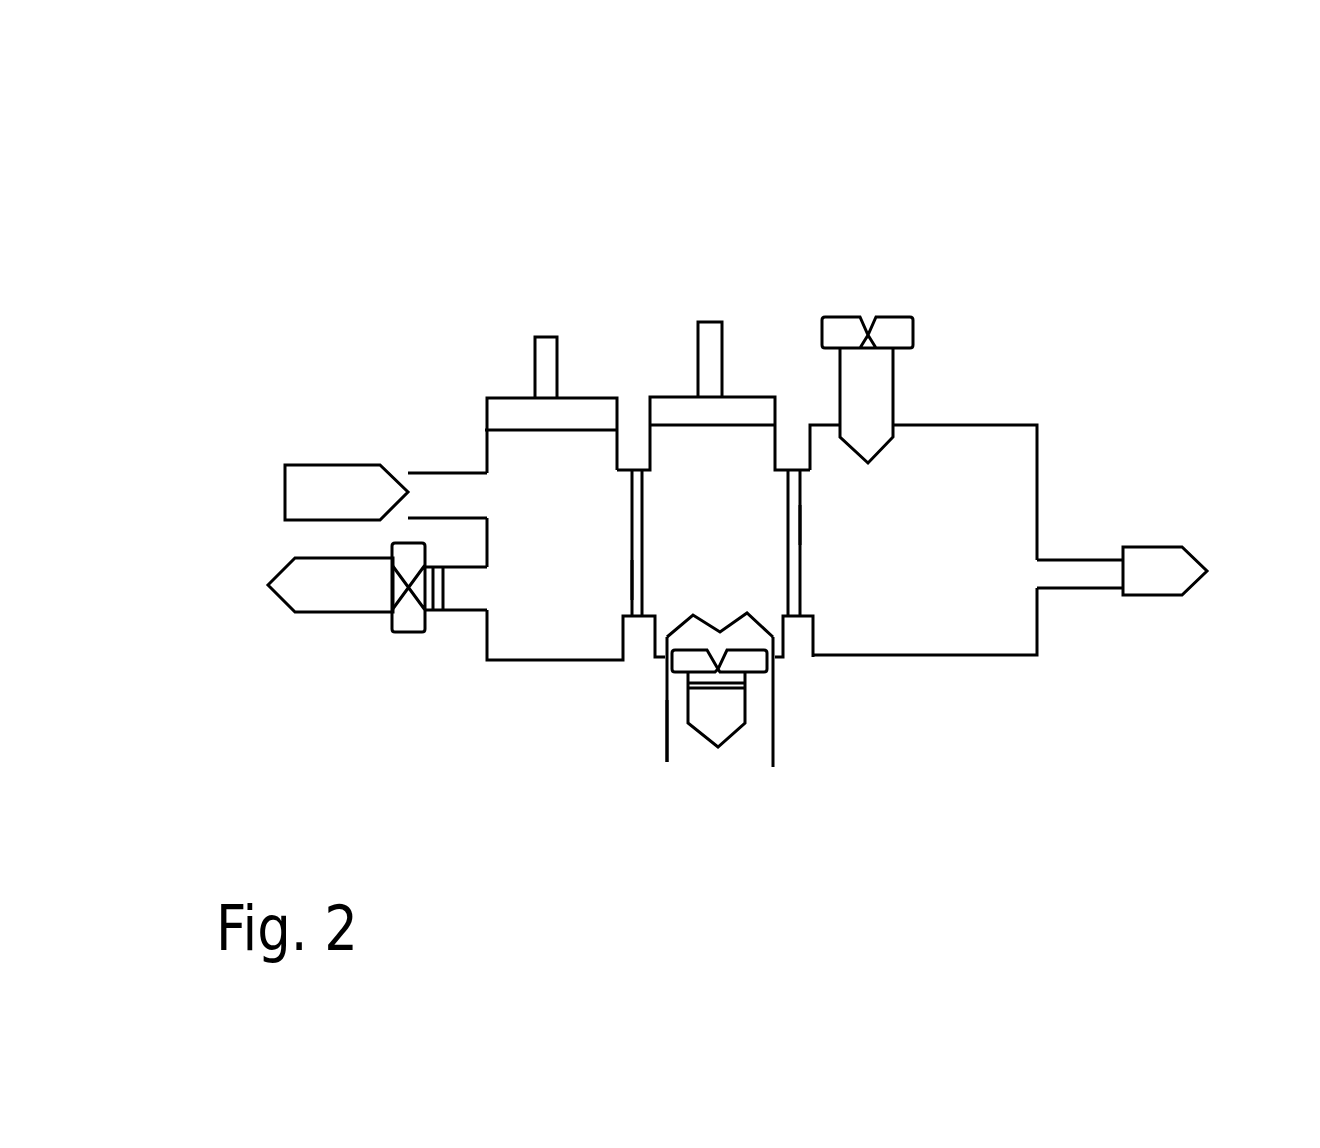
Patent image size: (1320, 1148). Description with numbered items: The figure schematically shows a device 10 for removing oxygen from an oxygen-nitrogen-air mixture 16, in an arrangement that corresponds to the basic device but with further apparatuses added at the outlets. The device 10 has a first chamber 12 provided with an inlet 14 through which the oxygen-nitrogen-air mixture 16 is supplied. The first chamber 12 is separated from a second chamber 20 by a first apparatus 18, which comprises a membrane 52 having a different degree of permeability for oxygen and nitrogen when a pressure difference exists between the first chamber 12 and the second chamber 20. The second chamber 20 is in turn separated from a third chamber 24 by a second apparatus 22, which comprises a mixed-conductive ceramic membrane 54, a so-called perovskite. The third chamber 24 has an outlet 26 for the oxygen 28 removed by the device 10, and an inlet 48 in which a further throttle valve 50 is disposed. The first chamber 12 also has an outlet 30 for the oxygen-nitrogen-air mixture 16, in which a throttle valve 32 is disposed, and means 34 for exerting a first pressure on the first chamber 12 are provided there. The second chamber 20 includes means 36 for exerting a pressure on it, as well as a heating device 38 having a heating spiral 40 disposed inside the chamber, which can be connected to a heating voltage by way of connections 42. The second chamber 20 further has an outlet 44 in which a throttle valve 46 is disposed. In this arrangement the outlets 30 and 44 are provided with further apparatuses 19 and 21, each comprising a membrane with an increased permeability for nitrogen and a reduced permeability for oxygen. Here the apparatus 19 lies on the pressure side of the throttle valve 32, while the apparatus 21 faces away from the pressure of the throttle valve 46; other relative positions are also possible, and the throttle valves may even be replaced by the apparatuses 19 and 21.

The device 10 is at (690, 513).
The first chamber 12 is at (551, 628).
The inlet 14 is at (423, 473).
The oxygen-nitrogen-air mixture 16 is at (293, 478).
The first apparatus 18 is at (632, 542).
The further apparatus 19 is at (440, 615).
The second chamber 20 is at (690, 462).
The further apparatus 21 is at (717, 677).
The second apparatus 22 is at (800, 577).
The third chamber 24 is at (992, 452).
The outlet 26 is at (1097, 557).
The oxygen 28 is at (1193, 553).
The outlet 30 is at (447, 613).
The throttle valve 32 is at (407, 632).
The means for exerting a first pressure 34 is at (528, 370).
The means for exerting a pressure 36 is at (740, 373).
The heating device 38 is at (667, 737).
The heating spiral 40 is at (693, 613).
The connections 42 is at (777, 740).
The outlet 44 is at (728, 673).
The throttle valve 46 is at (678, 673).
The inlet 48 is at (902, 417).
The further throttle valve 50 is at (893, 327).
The membrane 52 is at (632, 580).
The mixed-conductive ceramic membrane 54 is at (805, 523).